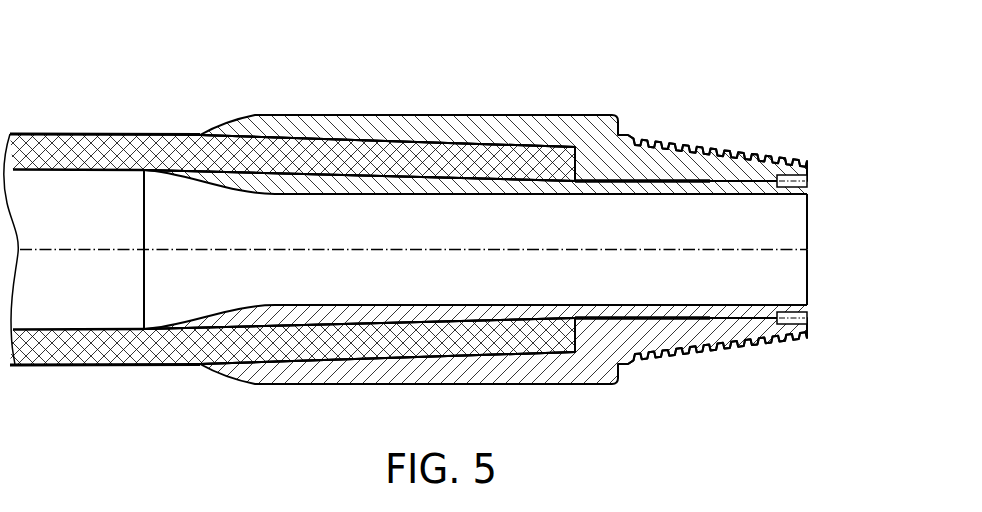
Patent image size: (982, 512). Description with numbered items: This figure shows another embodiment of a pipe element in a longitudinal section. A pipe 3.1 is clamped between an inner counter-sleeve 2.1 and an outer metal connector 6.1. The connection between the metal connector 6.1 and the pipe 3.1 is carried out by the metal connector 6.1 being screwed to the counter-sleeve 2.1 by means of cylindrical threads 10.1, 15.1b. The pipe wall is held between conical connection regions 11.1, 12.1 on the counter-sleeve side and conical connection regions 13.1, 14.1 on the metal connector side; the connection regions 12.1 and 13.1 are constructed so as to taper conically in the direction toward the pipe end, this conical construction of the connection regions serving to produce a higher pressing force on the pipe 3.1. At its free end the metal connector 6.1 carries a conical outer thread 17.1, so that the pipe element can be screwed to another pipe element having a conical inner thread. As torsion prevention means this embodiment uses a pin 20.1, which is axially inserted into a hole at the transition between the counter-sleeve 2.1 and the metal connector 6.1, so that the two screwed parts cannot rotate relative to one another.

The pipe 3.1 is at (69, 149).
The counter-sleeve 2.1 is at (288, 183).
The metal connector 6.1 is at (518, 135).
The connection region 13.1 is at (363, 140).
The connection region 14.1 is at (387, 185).
The connection region 11.1 is at (435, 177).
The connection region 12.1 is at (359, 186).
The cylindrical thread 10.1 is at (642, 178).
The cylindrical thread 15.1b is at (642, 181).
The conical outer thread 17.1 is at (753, 157).
The pin 20.1 is at (807, 183).